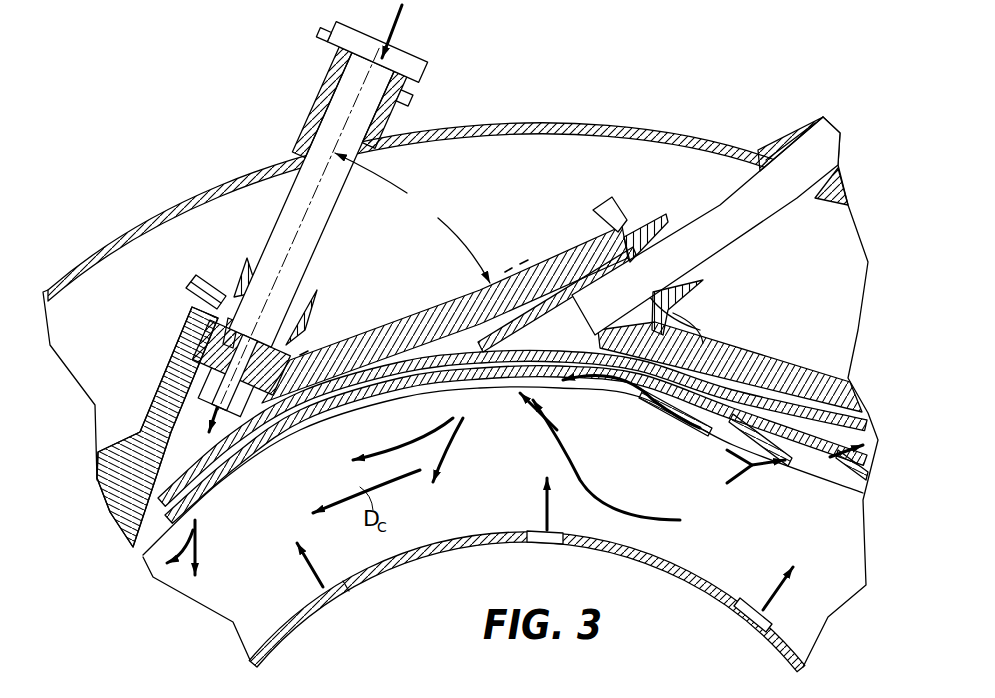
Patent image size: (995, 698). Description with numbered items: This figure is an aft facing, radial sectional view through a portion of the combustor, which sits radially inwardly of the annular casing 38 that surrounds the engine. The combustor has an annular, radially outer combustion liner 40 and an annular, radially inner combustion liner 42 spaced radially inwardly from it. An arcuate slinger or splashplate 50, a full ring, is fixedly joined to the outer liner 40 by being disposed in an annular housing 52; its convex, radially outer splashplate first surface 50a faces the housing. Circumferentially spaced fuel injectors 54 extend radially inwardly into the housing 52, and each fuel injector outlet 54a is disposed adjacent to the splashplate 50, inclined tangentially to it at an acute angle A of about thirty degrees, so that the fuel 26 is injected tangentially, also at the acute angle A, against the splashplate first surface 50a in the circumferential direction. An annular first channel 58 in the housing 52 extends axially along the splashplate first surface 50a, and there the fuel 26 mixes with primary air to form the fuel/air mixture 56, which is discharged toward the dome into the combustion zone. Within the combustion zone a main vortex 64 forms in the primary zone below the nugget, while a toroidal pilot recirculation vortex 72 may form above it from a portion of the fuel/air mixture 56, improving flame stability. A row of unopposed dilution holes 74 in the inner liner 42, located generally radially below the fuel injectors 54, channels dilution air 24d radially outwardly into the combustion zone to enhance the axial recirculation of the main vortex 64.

The fuel 26 is at (394, 34).
The annular casing 38 is at (106, 246).
The fuel injector 54 is at (290, 208).
The fuel injector outlet 54a is at (200, 405).
The annular housing 52 is at (205, 388).
The splashplate first surface 50a is at (110, 478).
The first channel 58 is at (130, 530).
The splashplate 50 is at (137, 540).
The outer combustion liner 40 is at (143, 557).
The dilution air 24d is at (313, 577).
The inner combustion liner 42 is at (250, 663).
The dilution hole 74 is at (343, 582).
The fuel/air mixture 56 is at (383, 450).
The pilot recirculation vortex 72 is at (653, 407).
The main vortex 64 is at (600, 513).
The acute angle A is at (412, 218).